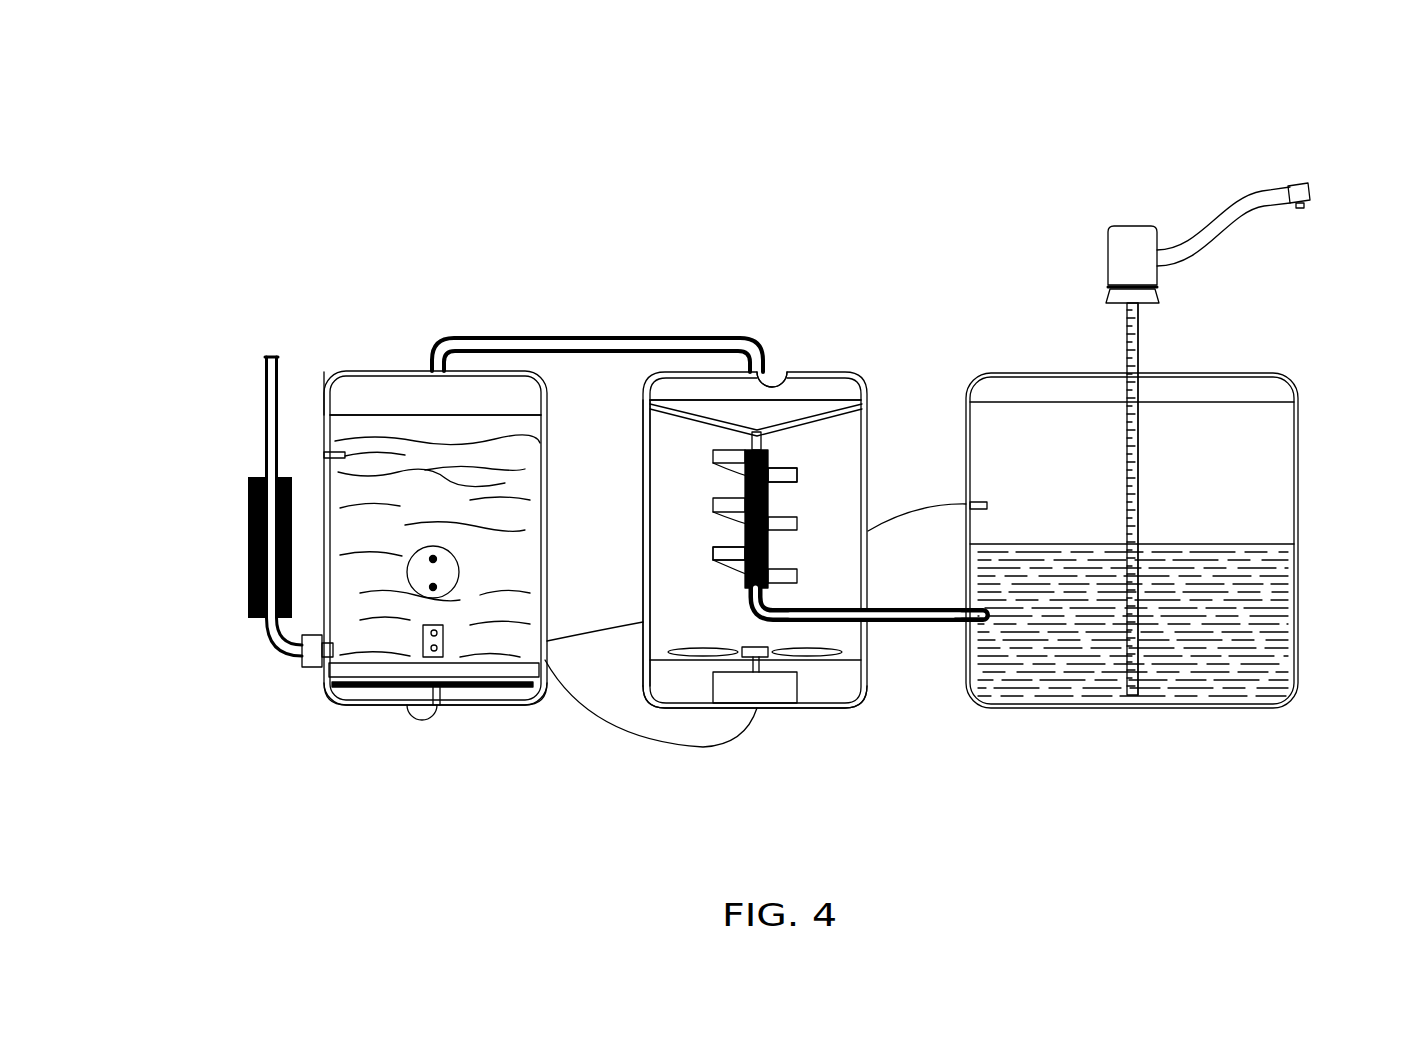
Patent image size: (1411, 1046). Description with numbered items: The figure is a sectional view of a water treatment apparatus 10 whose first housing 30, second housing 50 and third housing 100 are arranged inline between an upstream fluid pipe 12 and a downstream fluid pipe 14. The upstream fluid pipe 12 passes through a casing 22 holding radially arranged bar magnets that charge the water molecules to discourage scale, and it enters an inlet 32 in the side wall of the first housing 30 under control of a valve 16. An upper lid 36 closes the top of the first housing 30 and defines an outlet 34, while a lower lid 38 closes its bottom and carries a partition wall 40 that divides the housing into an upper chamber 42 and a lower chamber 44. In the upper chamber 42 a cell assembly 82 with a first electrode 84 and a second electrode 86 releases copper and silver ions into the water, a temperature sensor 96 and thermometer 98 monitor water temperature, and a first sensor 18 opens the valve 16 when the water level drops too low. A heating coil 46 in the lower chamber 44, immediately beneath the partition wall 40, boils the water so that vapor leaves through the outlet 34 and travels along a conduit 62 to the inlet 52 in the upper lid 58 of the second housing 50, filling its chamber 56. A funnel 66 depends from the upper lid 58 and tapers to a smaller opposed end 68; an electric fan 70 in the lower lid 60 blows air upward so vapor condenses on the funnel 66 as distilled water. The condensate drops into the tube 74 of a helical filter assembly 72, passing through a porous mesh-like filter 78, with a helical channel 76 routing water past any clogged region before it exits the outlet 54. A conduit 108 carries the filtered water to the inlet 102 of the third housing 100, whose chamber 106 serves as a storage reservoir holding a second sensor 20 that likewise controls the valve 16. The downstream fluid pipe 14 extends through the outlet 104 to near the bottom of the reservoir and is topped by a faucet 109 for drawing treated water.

The water treatment apparatus 10 is at (388, 100).
The upstream fluid pipe 12 is at (262, 427).
The downstream fluid pipe 14 is at (1142, 496).
The valve 16 is at (312, 667).
The first sensor 18 is at (325, 453).
The second sensor 20 is at (980, 501).
The casing 22 is at (248, 548).
The first housing 30 is at (396, 308).
The inlet 32 is at (334, 651).
The outlet 34 is at (428, 388).
The upper lid 36 is at (333, 371).
The lower lid 38 is at (515, 707).
The partition wall 40 is at (388, 690).
The upper chamber 42 is at (535, 476).
The lower chamber 44 is at (352, 695).
The heating coil 46 is at (468, 690).
The second housing 50 is at (873, 350).
The inlet 52 is at (772, 384).
The outlet 54 is at (862, 608).
The chamber 56 is at (647, 564).
The upper lid 58 is at (652, 382).
The lower lid 60 is at (838, 710).
The conduit 62 is at (596, 337).
The funnel 66 is at (770, 418).
The opposed end 68 is at (748, 594).
The electric fan 70 is at (764, 697).
The helical filter assembly 72 is at (720, 487).
The tube 74 is at (792, 508).
The helical channel 76 is at (800, 471).
The porous mesh-like filter 78 is at (742, 541).
The cell assembly 82 is at (410, 552).
The first electrode 84 is at (440, 559).
The second electrode 86 is at (428, 587).
The temperature sensor 96 is at (440, 630).
The thermometer 98 is at (446, 650).
The third housing 100 is at (1302, 355).
The inlet 102 is at (975, 600).
The outlet 104 is at (1143, 372).
The chamber 106 is at (1300, 532).
The conduit 108 is at (946, 627).
The faucet 109 is at (1106, 262).